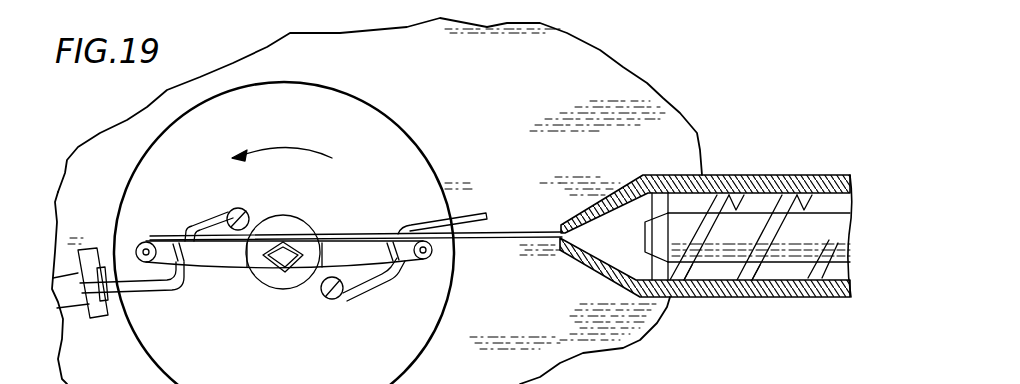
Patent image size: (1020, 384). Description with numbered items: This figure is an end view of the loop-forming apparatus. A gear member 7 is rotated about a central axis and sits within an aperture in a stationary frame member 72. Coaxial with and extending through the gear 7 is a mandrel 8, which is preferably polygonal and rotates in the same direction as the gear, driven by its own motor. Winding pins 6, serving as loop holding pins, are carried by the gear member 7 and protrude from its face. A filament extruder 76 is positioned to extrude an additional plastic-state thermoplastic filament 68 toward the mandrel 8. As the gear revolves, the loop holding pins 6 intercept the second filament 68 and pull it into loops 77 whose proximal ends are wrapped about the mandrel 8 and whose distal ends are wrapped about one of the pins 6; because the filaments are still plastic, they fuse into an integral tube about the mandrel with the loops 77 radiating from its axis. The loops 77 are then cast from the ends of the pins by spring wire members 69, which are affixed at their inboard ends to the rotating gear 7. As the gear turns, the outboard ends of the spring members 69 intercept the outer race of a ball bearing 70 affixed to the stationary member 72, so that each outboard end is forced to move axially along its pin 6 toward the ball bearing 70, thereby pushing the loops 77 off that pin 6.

The stationary frame member 72 is at (507, 77).
The gear member 7 is at (405, 133).
The filament extruder 76 is at (767, 175).
The additional filament 68 is at (533, 240).
The winding pins 6 is at (145, 247).
The mandrel 8 is at (285, 273).
The loops 77 is at (170, 235).
The spring wire members 69 is at (159, 283).
The ball bearing 70 is at (85, 250).